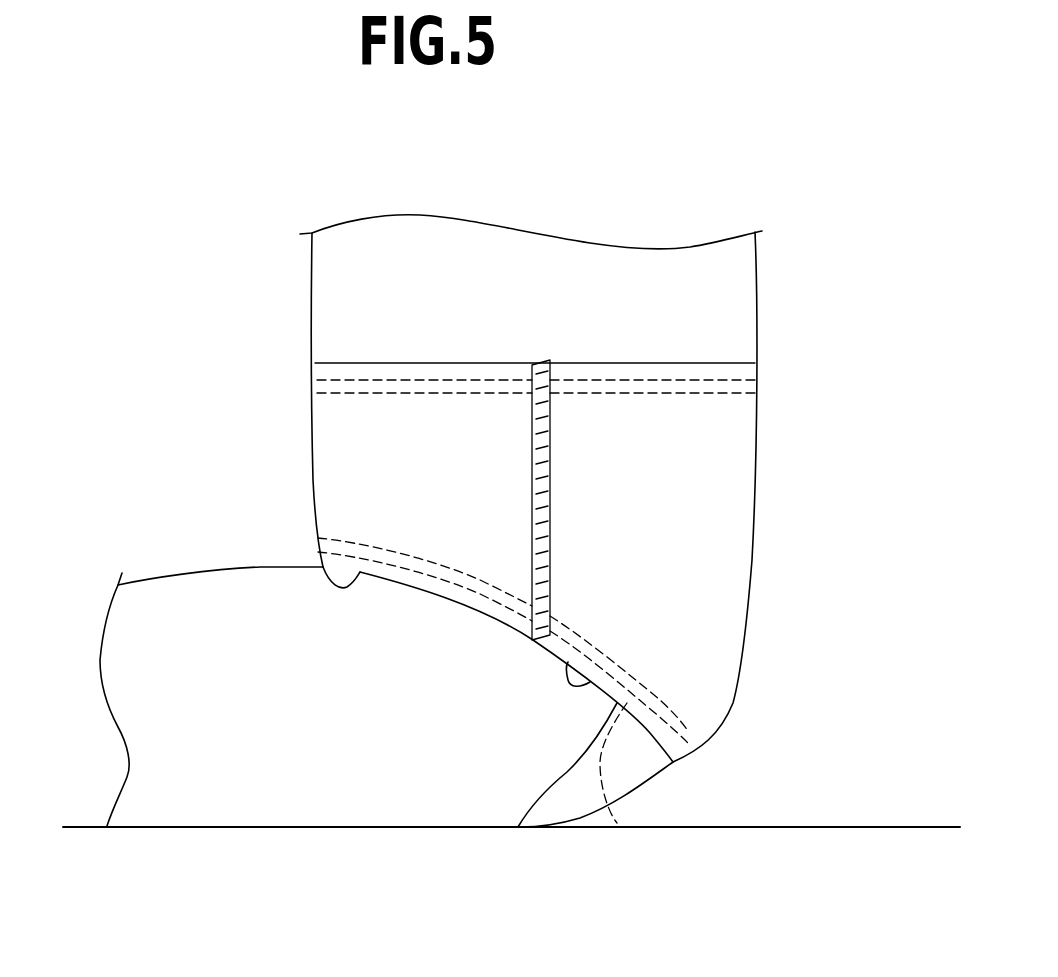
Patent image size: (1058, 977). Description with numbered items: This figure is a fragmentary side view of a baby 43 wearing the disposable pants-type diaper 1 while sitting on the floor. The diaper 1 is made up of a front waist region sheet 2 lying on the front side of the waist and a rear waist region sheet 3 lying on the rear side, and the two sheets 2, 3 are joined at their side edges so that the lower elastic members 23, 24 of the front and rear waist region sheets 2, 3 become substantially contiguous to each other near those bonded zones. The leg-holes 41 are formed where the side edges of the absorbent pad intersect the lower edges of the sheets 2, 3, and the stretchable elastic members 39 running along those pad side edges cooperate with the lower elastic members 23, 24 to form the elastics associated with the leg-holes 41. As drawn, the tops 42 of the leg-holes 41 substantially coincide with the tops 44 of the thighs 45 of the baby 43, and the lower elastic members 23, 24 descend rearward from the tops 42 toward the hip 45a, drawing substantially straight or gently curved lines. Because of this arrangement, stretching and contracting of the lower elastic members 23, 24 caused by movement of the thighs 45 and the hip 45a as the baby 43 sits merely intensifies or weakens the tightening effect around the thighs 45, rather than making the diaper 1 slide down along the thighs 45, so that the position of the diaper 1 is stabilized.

The disposable pants-type diaper 1 is at (766, 484).
The front waist region sheet 2 is at (367, 407).
The rear waist region sheet 3 is at (612, 412).
The lower stretchable elastic members 23 is at (420, 560).
The lower stretchable elastic members 24 is at (580, 637).
The stretchable elastic members 39 is at (617, 823).
The leg-holes 41 is at (590, 682).
The tops of the leg-holes 42 is at (361, 576).
The baby 43 is at (760, 275).
The tops of the thighs 44 is at (258, 562).
The thighs 45 is at (312, 792).
The hip 45a is at (557, 758).